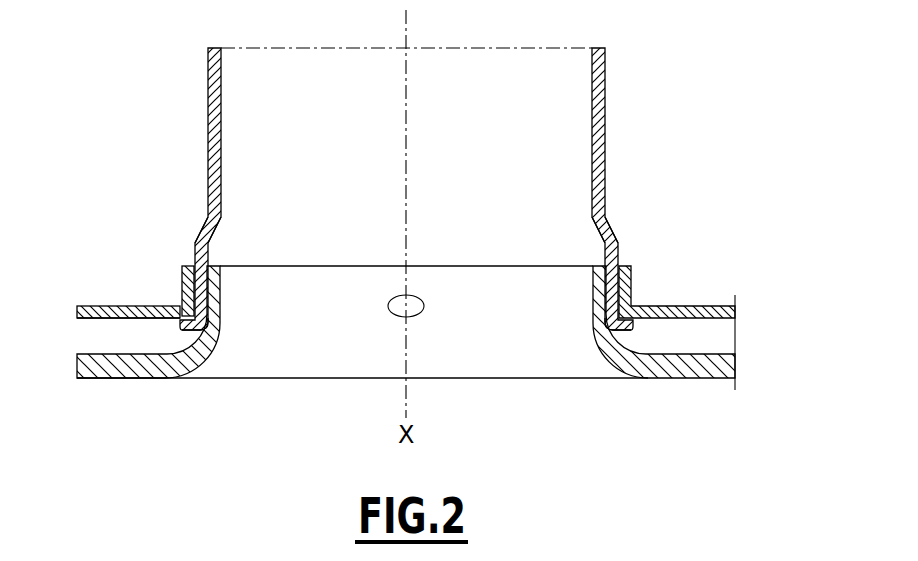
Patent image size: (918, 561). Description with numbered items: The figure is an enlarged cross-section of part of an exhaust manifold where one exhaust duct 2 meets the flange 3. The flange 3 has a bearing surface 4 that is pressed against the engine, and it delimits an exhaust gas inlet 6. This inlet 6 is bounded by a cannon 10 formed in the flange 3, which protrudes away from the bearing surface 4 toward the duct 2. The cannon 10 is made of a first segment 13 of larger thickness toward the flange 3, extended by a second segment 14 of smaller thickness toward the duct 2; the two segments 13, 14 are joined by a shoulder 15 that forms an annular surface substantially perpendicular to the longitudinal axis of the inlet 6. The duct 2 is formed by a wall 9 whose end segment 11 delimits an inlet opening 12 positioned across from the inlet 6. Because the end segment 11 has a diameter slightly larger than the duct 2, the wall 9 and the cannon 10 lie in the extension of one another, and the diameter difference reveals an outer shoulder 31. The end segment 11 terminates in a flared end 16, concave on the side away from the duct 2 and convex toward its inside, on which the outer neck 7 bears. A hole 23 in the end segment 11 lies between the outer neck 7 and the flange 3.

The exhaust duct 2 is at (415, 174).
The flange 3 is at (72, 368).
The bearing surface 4 is at (135, 380).
The exhaust gas inlet 6 is at (455, 385).
The outer neck 7 is at (93, 302).
The wall 9 is at (206, 133).
The cannon 10 is at (228, 305).
The end segment 11 is at (200, 228).
The inlet opening 12 is at (338, 262).
The first segment 13 is at (600, 343).
The second segment 14 is at (590, 300).
The shoulder 15 is at (640, 330).
The flared end 16 is at (177, 325).
The hole 23 is at (190, 300).
The outer shoulder 31 is at (615, 215).